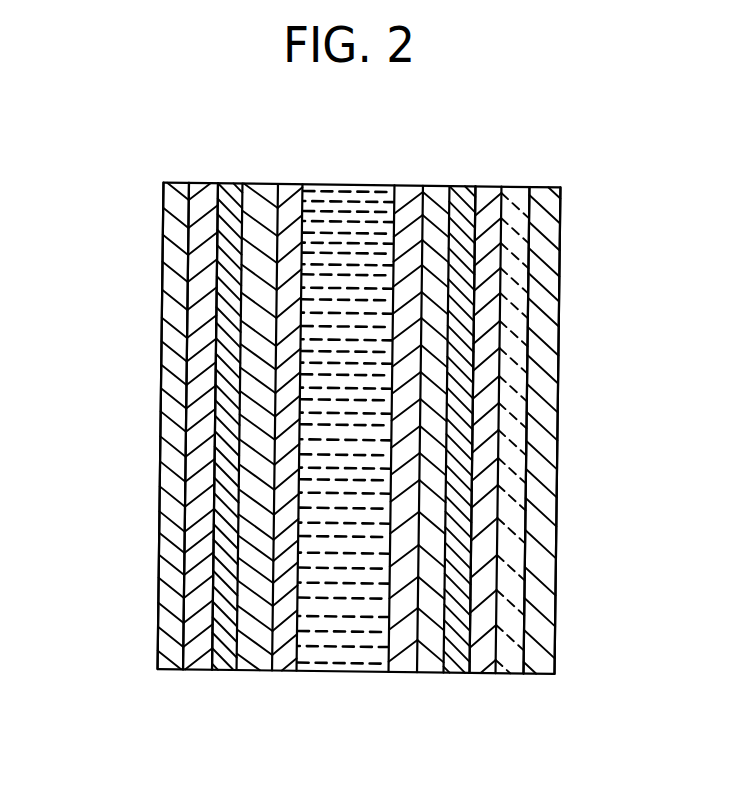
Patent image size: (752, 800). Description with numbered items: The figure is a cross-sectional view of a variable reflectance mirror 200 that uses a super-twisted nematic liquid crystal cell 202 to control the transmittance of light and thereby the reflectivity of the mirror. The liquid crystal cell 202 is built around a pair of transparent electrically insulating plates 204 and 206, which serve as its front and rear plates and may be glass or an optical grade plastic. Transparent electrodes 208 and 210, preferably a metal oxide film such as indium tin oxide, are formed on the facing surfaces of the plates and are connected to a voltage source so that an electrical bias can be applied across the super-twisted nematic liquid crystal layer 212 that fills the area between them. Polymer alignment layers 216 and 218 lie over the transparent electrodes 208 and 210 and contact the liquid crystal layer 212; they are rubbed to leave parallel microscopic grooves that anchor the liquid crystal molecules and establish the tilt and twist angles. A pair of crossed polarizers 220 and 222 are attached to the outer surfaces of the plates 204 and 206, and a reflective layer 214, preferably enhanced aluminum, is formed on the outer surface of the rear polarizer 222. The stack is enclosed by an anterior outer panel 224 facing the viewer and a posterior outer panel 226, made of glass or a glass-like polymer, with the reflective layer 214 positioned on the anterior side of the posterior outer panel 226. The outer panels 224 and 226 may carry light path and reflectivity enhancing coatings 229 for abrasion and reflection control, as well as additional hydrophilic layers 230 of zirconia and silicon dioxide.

The variable reflectance mirror 200 is at (593, 413).
The super-twisted nematic liquid crystal cell 202 is at (475, 178).
The transparent electrically insulating plate 204 is at (220, 671).
The transparent electrically insulating plate 206 is at (453, 672).
The transparent electrode 208 is at (250, 671).
The transparent electrode 210 is at (428, 672).
The super-twisted nematic liquid crystal layer 212 is at (352, 671).
The reflective layer 214 is at (513, 673).
The polymer alignment layer 216 is at (283, 671).
The polymer alignment layer 218 is at (400, 672).
The polarizer 220 is at (197, 670).
The polarizer 222 is at (480, 673).
The anterior outer panel 224 is at (158, 656).
The posterior outer panel 226 is at (556, 638).
The light path and reflectivity enhancing coatings 229 is at (538, 172).
The hydrophilic layers 230 is at (565, 173).